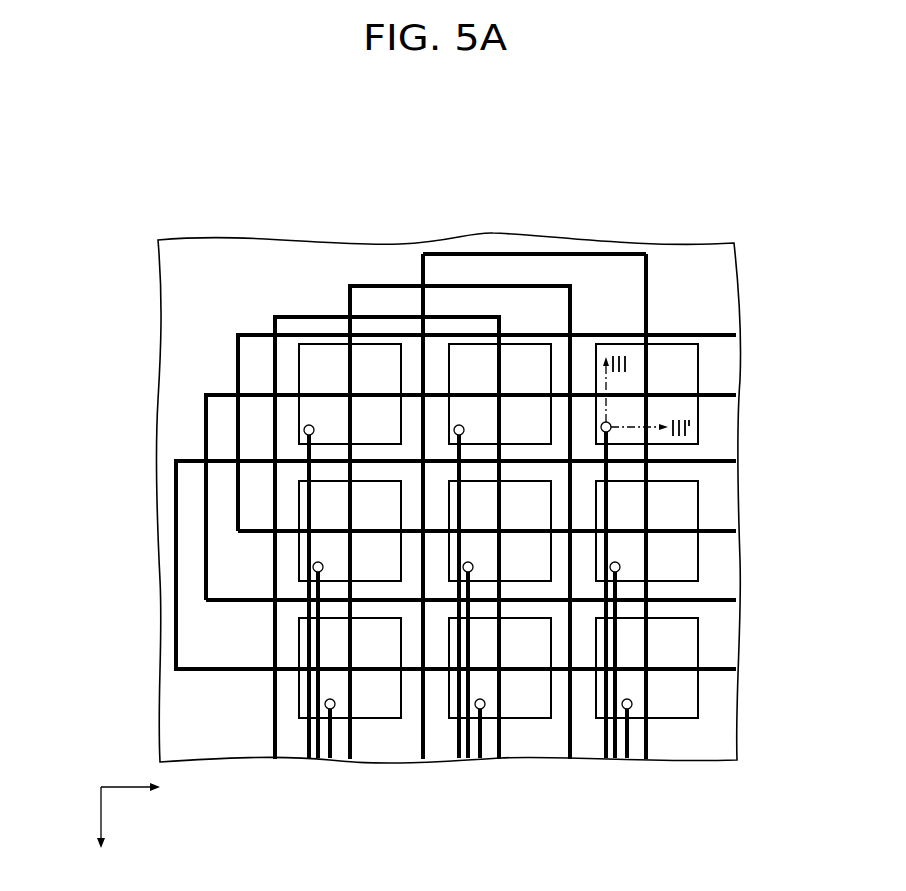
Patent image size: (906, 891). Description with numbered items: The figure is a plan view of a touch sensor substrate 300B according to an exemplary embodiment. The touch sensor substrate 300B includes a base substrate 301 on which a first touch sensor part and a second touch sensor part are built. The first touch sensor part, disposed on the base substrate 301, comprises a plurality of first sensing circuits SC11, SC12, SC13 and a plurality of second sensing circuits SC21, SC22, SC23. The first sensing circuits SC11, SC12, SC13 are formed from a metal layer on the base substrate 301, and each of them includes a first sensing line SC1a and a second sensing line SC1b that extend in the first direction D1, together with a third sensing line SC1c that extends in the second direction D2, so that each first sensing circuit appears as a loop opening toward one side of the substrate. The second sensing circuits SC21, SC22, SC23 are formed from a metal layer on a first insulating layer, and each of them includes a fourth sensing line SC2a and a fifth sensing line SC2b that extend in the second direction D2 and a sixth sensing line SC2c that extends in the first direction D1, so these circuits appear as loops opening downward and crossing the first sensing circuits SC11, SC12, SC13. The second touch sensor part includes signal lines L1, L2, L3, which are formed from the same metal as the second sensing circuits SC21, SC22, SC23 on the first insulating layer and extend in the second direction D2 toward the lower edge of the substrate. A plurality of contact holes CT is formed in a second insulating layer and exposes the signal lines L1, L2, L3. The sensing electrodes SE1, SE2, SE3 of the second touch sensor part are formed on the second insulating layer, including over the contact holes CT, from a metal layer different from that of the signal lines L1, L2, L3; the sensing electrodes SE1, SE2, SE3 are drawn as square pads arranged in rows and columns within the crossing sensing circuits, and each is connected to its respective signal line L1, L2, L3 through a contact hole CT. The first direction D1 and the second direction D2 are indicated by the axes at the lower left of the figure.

The touch sensor substrate 300B is at (414, 478).
The base substrate 301 is at (209, 275).
The sensing electrode SE1 is at (306, 355).
The sensing electrode SE2 is at (535, 360).
The sensing electrode SE3 is at (680, 353).
The first sensing circuit SC11 is at (385, 467).
The first sensing line SC1a is at (256, 392).
The second sensing line SC1b is at (256, 525).
The third sensing line SC1c is at (206, 428).
The first sensing circuit SC12 is at (207, 577).
The first sensing circuit SC13 is at (176, 633).
The second sensing circuit SC21 is at (335, 316).
The second sensing circuit SC22 is at (393, 285).
The second sensing circuit SC23 is at (539, 462).
The fourth sensing line SC2a is at (423, 268).
The fifth sensing line SC2b is at (627, 478).
The sixth sensing line SC2c is at (518, 253).
The contact hole CT is at (610, 423).
The signal line L1 is at (313, 742).
The signal line L2 is at (460, 742).
The signal line L3 is at (687, 612).
The first direction D1 is at (145, 789).
The second direction D2 is at (101, 832).